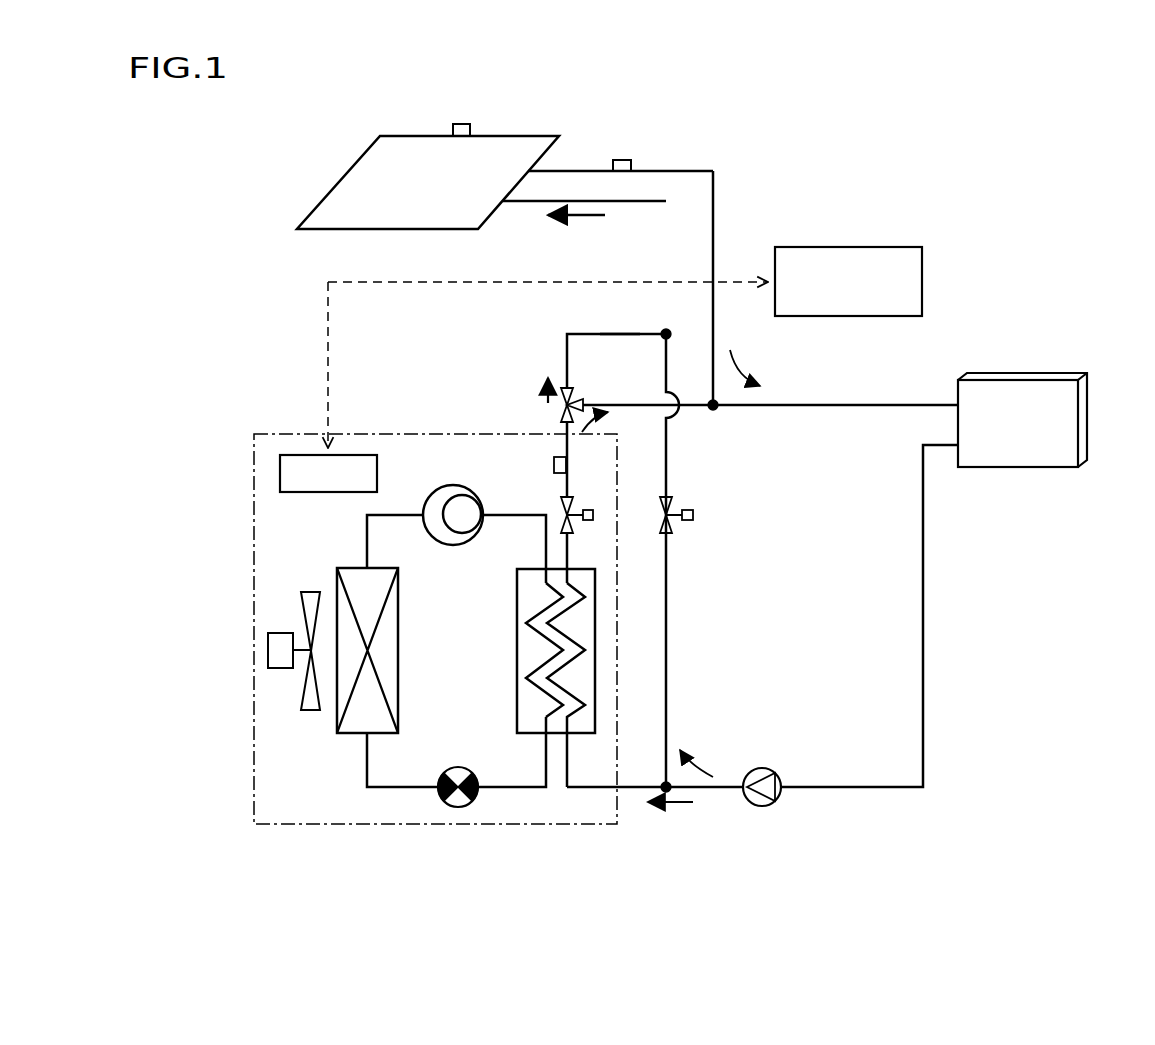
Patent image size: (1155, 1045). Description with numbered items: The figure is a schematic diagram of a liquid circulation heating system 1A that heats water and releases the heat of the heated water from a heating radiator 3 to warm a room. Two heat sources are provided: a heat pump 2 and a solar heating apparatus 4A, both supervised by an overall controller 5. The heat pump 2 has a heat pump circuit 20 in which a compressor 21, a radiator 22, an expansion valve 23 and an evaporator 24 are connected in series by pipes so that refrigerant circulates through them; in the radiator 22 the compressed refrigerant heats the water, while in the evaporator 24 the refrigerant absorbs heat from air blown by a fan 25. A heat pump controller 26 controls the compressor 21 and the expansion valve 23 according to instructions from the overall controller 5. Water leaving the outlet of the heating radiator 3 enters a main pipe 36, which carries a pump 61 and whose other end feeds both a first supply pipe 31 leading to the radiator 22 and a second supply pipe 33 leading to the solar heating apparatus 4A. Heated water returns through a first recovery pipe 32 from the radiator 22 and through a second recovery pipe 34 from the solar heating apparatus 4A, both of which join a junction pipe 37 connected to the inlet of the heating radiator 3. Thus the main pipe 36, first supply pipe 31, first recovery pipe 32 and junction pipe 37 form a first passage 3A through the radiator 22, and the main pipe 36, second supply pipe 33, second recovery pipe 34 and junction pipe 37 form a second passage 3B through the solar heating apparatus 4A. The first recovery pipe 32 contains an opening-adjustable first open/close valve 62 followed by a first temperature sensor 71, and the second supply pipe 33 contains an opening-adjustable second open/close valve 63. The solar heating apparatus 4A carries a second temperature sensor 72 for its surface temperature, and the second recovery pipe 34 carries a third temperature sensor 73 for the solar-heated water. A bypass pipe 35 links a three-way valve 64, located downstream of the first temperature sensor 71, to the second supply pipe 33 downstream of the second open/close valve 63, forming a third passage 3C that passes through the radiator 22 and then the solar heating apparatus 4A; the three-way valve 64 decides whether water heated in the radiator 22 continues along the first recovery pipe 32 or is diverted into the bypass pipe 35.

The liquid circulation heating system 1A is at (1062, 198).
The heat pump 2 is at (248, 530).
The heating radiator 3 is at (1065, 412).
The first passage 3A is at (586, 796).
The second passage 3B is at (696, 166).
The third passage 3C is at (610, 328).
The solar heating apparatus 4A is at (366, 181).
The overall controller 5 is at (880, 258).
The heat pump circuit 20 is at (515, 796).
The compressor 21 is at (440, 490).
The radiator 22 is at (513, 633).
The expansion valve 23 is at (458, 808).
The evaporator 24 is at (352, 735).
The fan 25 is at (280, 633).
The heat pump controller 26 is at (295, 455).
The first supply pipe 31 is at (625, 790).
The first recovery pipe 32 is at (710, 400).
The second supply pipe 33 is at (668, 675).
The second recovery pipe 34 is at (718, 197).
The bypass pipe 35 is at (583, 333).
The main pipe 36 is at (925, 688).
The junction pipe 37 is at (825, 407).
The pump 61 is at (765, 806).
The first open/close valve 62 is at (576, 533).
The second open/close valve 63 is at (672, 530).
The three-way valve 64 is at (562, 418).
The first temperature sensor 71 is at (553, 465).
The second temperature sensor 72 is at (461, 124).
The third temperature sensor 73 is at (621, 160).